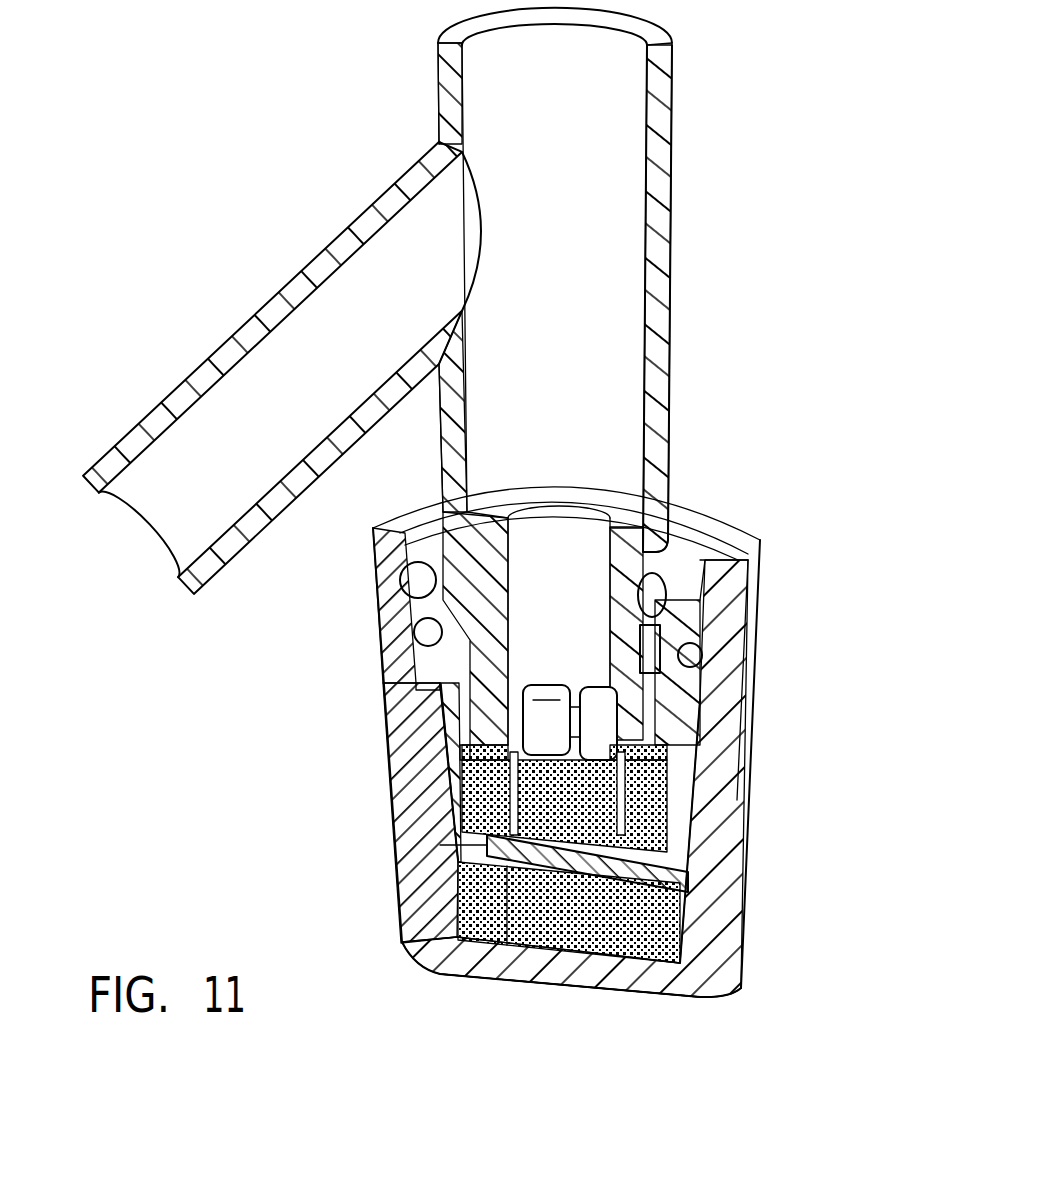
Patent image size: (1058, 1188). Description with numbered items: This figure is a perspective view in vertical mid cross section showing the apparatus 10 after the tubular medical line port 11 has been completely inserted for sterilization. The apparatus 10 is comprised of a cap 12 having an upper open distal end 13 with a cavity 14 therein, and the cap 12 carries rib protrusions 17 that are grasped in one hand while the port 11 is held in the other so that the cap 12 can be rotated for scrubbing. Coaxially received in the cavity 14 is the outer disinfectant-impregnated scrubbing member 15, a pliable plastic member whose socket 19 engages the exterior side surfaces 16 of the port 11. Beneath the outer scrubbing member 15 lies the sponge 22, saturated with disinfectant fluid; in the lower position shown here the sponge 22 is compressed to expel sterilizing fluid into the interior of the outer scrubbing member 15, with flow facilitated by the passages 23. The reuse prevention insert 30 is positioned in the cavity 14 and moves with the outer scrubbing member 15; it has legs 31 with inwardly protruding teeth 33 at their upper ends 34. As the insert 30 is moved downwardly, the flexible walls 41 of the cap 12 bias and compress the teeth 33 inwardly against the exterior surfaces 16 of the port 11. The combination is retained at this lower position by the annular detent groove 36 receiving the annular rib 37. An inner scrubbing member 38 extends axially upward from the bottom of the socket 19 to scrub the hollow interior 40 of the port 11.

The apparatus 10 is at (822, 417).
The tubular medical line port 11 is at (673, 427).
The cap 12 is at (748, 653).
The upper open distal end 13 is at (743, 533).
The cavity 14 is at (392, 588).
The outer disinfectant-impregnated scrubbing member 15 is at (443, 830).
The exterior side surfaces 16 is at (720, 663).
The rib protrusions 17 is at (404, 943).
The socket 19 is at (677, 723).
The sponge 22 is at (680, 935).
The passages 23 is at (450, 797).
The reuse prevention insert 30 is at (412, 643).
The legs 31 is at (447, 720).
The teeth 33 is at (430, 633).
The upper ends 34 is at (437, 683).
The annular detent groove 36 is at (503, 947).
The annular rib 37 is at (690, 882).
The inner scrubbing member 38 is at (455, 757).
The hollow interior 40 is at (512, 540).
The flexible walls 41 is at (752, 698).